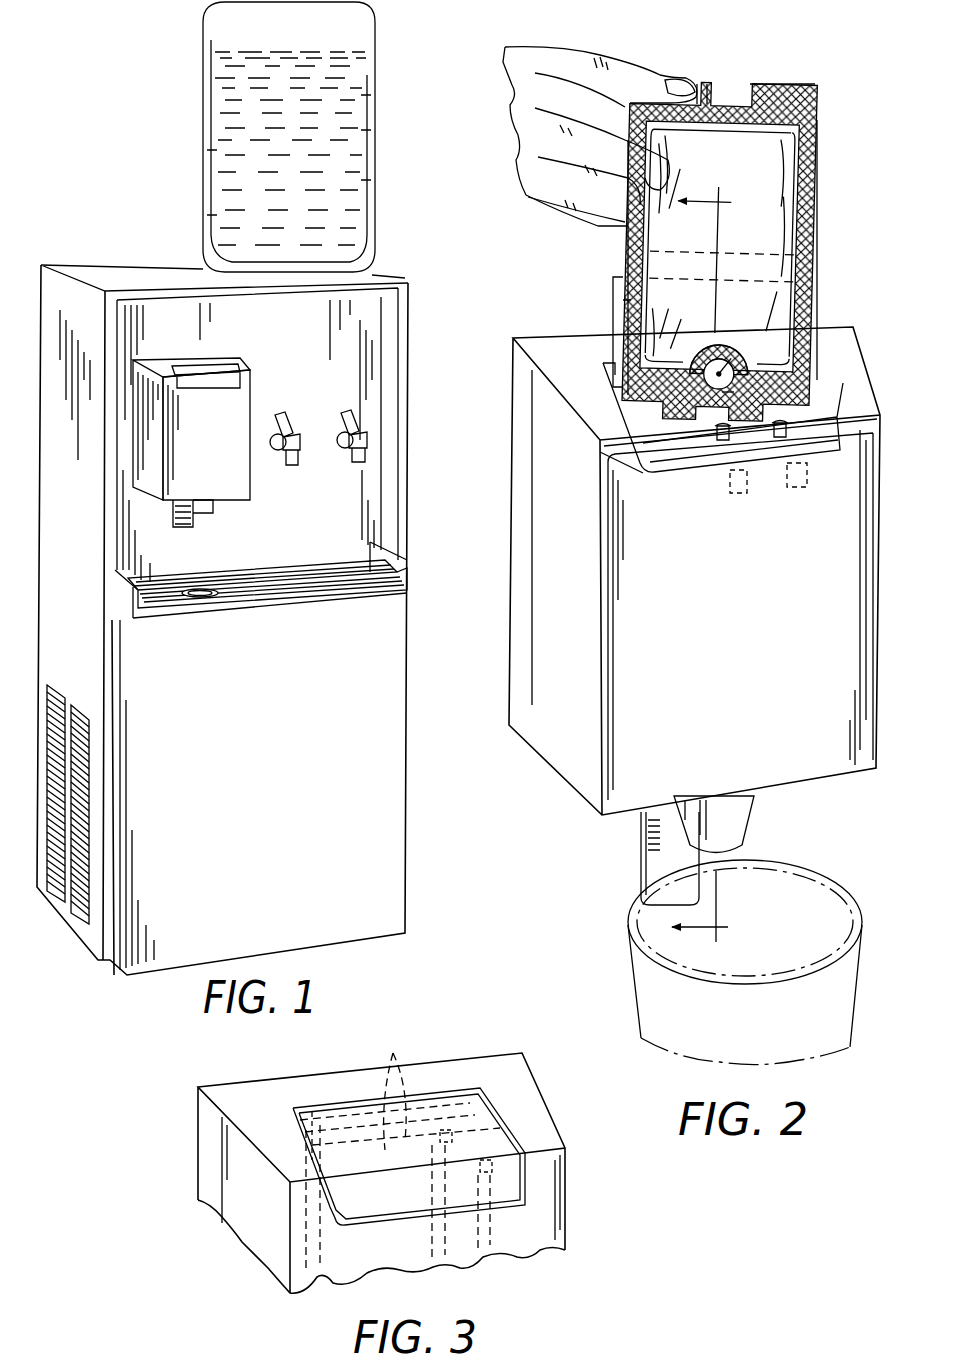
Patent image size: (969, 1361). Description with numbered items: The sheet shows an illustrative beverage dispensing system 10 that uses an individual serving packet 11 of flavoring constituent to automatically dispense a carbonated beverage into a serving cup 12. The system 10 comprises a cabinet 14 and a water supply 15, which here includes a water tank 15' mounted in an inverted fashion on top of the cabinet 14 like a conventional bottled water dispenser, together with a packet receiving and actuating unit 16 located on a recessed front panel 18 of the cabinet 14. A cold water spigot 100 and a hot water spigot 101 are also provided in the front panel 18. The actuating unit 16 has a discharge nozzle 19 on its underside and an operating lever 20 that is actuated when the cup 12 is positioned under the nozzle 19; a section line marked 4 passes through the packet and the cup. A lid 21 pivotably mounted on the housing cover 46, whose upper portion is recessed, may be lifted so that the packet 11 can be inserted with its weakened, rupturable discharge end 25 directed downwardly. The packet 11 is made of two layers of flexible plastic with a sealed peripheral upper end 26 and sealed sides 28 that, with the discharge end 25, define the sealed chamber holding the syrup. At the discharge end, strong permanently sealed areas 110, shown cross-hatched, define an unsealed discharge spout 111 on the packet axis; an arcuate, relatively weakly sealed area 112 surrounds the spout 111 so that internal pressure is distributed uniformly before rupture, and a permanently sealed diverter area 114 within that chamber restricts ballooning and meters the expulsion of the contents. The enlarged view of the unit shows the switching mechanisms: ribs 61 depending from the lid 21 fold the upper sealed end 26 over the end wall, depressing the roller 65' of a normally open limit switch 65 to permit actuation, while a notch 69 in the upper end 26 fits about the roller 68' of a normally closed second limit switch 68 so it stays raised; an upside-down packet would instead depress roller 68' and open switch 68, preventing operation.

In FIG. 1, the beverage dispensing system 10 is at (425, 338).
In FIG. 2, the packet 11 is at (826, 168).
In FIG. 3, the packet 11 is at (307, 1247).
In FIG. 2, the serving cup 12 is at (850, 978).
In FIG. 1, the cabinet 14 is at (400, 815).
In FIG. 1, the water supply 15 is at (245, 137).
In FIG. 1, the water tank 15' is at (244, 148).
In FIG. 1, the packet receiving and actuating unit 16 is at (143, 438).
In FIG. 2, the packet receiving and actuating unit 16 is at (870, 548).
In FIG. 3, the packet receiving and actuating unit 16 is at (208, 1170).
In FIG. 1, the recessed front panel 18 is at (367, 377).
In FIG. 1, the discharge nozzle 19 is at (217, 508).
In FIG. 2, the discharge nozzle 19 is at (758, 815).
In FIG. 1, the operating lever 20 is at (193, 528).
In FIG. 2, the operating lever 20 is at (641, 862).
In FIG. 1, the lid 21 is at (204, 367).
In FIG. 2, the lid 21 is at (613, 307).
In FIG. 3, the lid 21 is at (330, 1107).
In FIG. 2, the rupturable discharge end 25 is at (730, 366).
In FIG. 2, the sealed peripheral upper end 26 is at (810, 84).
In FIG. 2, the sealed sides 28 is at (818, 222).
In FIG. 1, the housing cover 46 is at (241, 403).
In FIG. 2, the housing cover 46 is at (855, 650).
In FIG. 3, the housing cover 46 is at (550, 1223).
In FIG. 3, the ribs 61 is at (393, 1053).
In FIG. 2, the limit switch 65 is at (841, 442).
In FIG. 3, the limit switch 65 is at (516, 1232).
In FIG. 3, the roller 65' is at (542, 1128).
In FIG. 2, the second limit switch 68 is at (698, 498).
In FIG. 3, the second limit switch 68 is at (465, 1224).
In FIG. 2, the roller 68' is at (692, 445).
In FIG. 3, the roller 68' is at (480, 1098).
In FIG. 2, the notch 69 is at (730, 90).
In FIG. 3, the notch 69 is at (345, 1192).
In FIG. 1, the cold water spigot 100 is at (368, 452).
In FIG. 1, the hot water spigot 101 is at (293, 465).
In FIG. 2, the permanently sealed areas 110 is at (715, 445).
In FIG. 2, the discharge spout 111 is at (727, 393).
In FIG. 2, the weakly sealed area 112 is at (712, 368).
In FIG. 2, the diverter area 114 is at (725, 330).
In FIG. 2, the section line 4- 4 is at (715, 564).